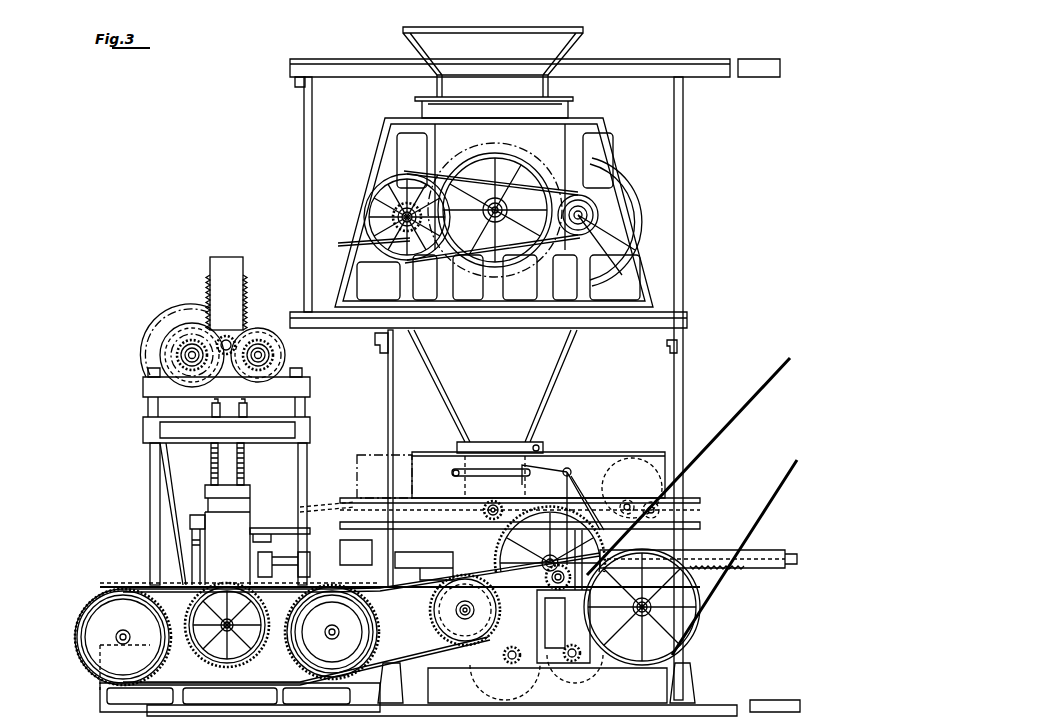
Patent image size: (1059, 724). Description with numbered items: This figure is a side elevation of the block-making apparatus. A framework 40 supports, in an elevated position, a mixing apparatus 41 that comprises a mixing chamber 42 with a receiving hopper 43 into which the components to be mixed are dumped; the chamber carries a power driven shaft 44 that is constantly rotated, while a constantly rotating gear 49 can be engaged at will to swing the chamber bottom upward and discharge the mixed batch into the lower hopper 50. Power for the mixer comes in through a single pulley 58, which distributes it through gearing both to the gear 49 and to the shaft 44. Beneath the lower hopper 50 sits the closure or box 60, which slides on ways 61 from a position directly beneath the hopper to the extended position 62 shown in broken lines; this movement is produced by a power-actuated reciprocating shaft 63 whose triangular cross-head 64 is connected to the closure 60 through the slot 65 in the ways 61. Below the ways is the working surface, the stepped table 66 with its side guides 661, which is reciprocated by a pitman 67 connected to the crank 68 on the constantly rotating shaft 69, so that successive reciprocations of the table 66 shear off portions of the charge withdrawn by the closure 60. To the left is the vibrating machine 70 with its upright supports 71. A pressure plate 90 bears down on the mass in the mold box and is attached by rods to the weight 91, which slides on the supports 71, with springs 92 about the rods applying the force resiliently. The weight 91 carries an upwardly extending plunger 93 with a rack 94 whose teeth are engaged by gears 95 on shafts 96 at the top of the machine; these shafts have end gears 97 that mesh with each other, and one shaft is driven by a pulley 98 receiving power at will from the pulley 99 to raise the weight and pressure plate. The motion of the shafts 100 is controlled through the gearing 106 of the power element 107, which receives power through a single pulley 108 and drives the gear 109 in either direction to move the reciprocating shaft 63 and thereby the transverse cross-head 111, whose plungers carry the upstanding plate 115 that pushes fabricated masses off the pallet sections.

The framework 40 is at (688, 364).
The mixing apparatus 41 is at (605, 128).
The mixing chamber 42 is at (495, 210).
The receiving hopper 43 is at (565, 50).
The power driven shaft 44 is at (495, 222).
The gear 49 is at (432, 178).
The lower hopper 50 is at (492, 391).
The pulley 58 is at (628, 168).
The closure or box 60 is at (455, 477).
The ways 61 is at (600, 463).
The extended position 62 is at (365, 455).
The reciprocating shaft 63 is at (715, 552).
The triangular cross-head 64 is at (565, 515).
The slot 65 is at (496, 504).
The stepped table 66 is at (298, 515).
The side guides 661 is at (318, 512).
The pitman 67 is at (632, 488).
The crank 68 is at (644, 496).
The constantly rotating shaft 69 is at (663, 509).
The vibrating machine 70 is at (144, 559).
The upright supports 71 is at (308, 457).
The pressure plate 90 is at (207, 503).
The weight 91 is at (268, 432).
The springs 92 is at (211, 462).
The plunger 93 is at (243, 269).
The rack 94 is at (245, 303).
The gears 95 is at (150, 358).
The shafts 96 is at (192, 345).
The end gears 97 is at (228, 336).
The pulley 98 is at (205, 408).
The pulley 99 is at (248, 657).
The shafts 100 is at (118, 634).
The gearing 106 is at (447, 631).
The power element 107 is at (605, 668).
The pulley 108 is at (705, 598).
The gear 109 is at (540, 539).
The cross-head 111 is at (385, 556).
The upstanding plate 115 is at (252, 540).